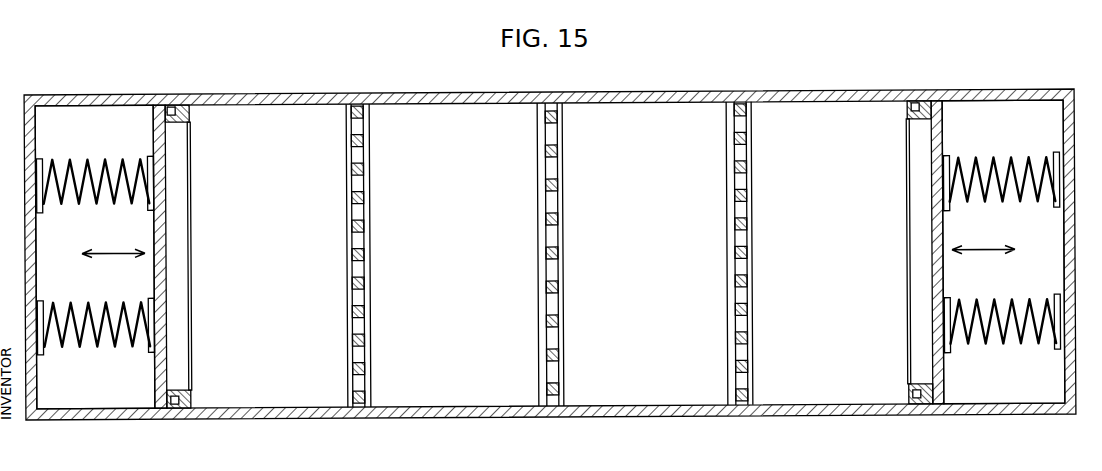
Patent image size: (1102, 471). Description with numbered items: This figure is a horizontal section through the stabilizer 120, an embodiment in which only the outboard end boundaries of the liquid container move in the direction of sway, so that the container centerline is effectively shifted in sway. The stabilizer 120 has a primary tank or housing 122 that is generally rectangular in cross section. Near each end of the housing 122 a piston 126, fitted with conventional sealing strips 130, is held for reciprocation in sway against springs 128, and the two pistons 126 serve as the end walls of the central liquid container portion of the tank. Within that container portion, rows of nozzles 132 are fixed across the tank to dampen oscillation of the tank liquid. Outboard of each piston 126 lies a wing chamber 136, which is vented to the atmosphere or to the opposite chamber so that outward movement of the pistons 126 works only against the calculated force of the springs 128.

The stabilizer 120 is at (426, 92).
The housing 122 is at (790, 92).
The piston 126 is at (166, 211).
The spring 128 is at (98, 162).
The sealing strip 130 is at (176, 102).
The nozzle 132 is at (546, 171).
The wing chamber 136 is at (61, 118).